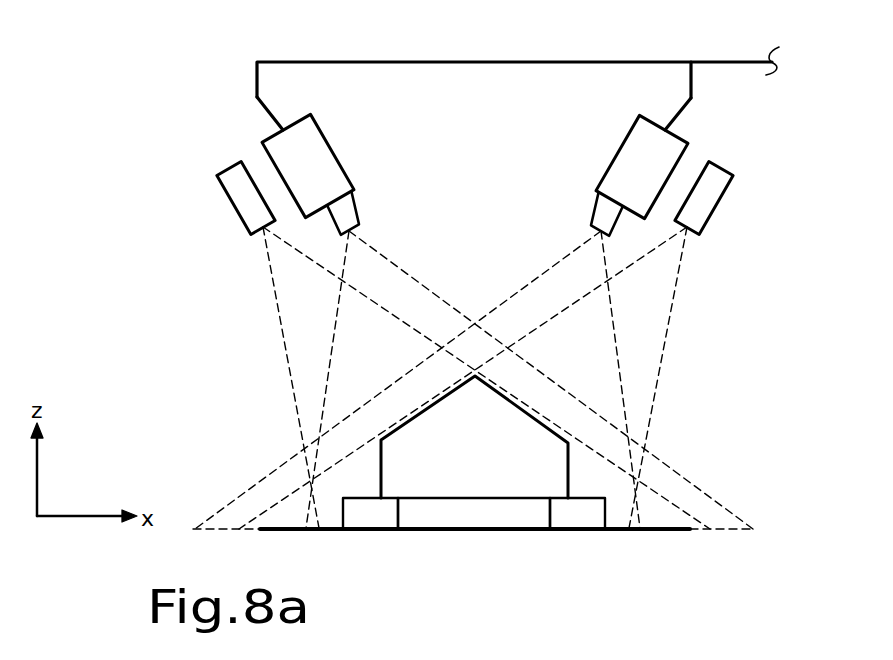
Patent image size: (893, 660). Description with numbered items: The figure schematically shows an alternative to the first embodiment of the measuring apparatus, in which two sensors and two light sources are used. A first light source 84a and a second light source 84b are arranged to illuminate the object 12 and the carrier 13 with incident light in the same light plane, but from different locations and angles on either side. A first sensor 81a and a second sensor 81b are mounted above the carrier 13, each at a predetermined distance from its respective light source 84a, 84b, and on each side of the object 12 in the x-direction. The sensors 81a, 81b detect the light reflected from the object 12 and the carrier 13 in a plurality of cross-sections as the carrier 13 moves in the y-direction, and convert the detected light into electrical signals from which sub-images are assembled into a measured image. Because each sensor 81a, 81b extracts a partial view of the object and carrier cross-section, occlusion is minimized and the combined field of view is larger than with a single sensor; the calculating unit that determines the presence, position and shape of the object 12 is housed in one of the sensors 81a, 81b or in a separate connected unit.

The first sensor 81a is at (625, 163).
The second sensor 81b is at (332, 177).
The first light source 84a is at (713, 193).
The second light source 84b is at (243, 204).
The object 12 is at (548, 421).
The carrier 13 is at (681, 532).